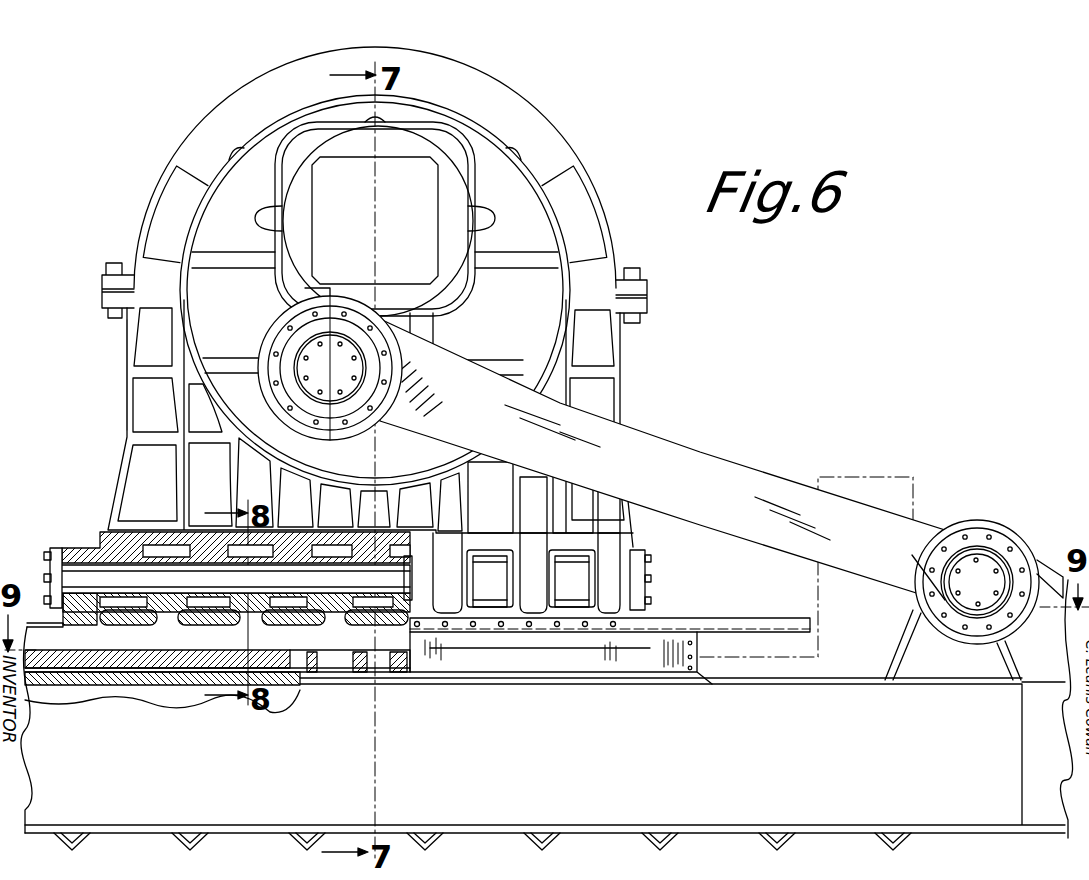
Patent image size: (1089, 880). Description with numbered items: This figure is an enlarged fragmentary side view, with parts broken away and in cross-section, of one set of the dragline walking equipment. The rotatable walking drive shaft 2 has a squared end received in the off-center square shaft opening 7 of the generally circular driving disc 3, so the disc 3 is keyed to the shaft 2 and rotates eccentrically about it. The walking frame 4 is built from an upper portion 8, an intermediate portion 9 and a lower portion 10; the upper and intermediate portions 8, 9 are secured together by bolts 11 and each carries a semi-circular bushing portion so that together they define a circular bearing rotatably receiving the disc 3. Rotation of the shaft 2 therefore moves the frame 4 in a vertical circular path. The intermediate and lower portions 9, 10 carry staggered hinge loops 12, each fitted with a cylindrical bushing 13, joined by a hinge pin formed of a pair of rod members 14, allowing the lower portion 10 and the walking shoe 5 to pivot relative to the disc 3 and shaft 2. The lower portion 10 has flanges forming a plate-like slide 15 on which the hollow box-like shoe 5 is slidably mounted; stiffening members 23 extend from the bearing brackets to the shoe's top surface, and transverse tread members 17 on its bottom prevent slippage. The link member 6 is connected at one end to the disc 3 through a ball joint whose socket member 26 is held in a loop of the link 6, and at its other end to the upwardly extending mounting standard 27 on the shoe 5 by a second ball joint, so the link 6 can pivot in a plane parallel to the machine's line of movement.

The walking drive shaft 2 is at (412, 172).
The driving disc 3 is at (538, 203).
The walking frame 4 is at (623, 364).
The walking shoe 5 is at (830, 684).
The link member 6 is at (680, 450).
The square shaft opening 7 is at (318, 182).
The upper portion 8 is at (207, 116).
The intermediate portion 9 is at (127, 378).
The lower portion 10 is at (605, 590).
The bolts 11 is at (114, 264).
The hinge loops 12 is at (140, 612).
The cylindrical bushing 13 is at (112, 548).
The rod members 14 is at (72, 568).
The slide 15 is at (150, 672).
The tread members 17 is at (150, 852).
The stiffening members 23 is at (318, 672).
The socket member 26 is at (298, 336).
The mounting standard 27 is at (925, 660).